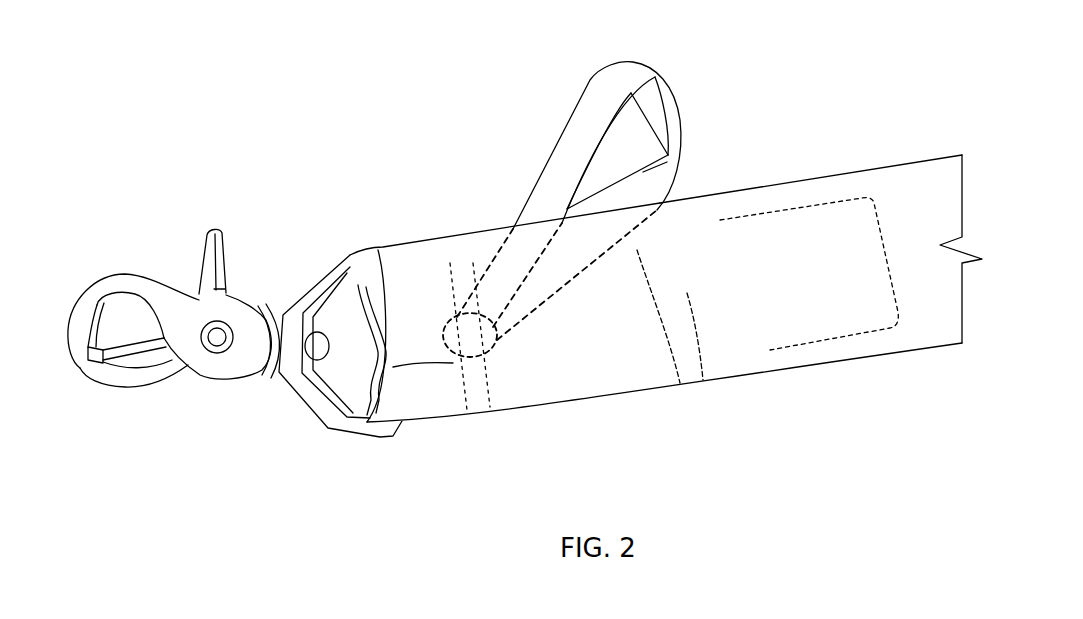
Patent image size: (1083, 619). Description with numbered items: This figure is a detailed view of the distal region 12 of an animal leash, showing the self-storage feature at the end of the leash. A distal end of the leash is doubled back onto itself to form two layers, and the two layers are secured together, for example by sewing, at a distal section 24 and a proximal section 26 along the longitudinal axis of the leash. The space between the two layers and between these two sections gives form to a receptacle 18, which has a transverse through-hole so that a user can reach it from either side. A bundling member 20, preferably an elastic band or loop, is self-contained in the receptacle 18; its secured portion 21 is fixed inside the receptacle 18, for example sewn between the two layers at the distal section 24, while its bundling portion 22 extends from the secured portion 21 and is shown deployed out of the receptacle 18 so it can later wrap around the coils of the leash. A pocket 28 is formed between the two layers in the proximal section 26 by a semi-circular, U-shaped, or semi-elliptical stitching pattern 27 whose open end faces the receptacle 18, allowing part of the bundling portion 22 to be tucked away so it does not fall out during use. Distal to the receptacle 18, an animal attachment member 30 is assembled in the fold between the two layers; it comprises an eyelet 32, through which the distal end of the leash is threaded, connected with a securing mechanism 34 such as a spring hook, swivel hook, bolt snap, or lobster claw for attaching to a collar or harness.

The distal region 12 is at (306, 102).
The receptacle 18 is at (653, 393).
The bundling member 20 is at (521, 124).
The secured portion 21 is at (495, 345).
The bundling portion 22 is at (668, 83).
The distal section 24 is at (455, 226).
The proximal section 26 is at (802, 166).
The stitching pattern 27 is at (868, 201).
The pocket 28 is at (825, 283).
The animal attachment member 30 is at (197, 446).
The eyelet 32 is at (325, 420).
The securing mechanism 34 is at (140, 274).